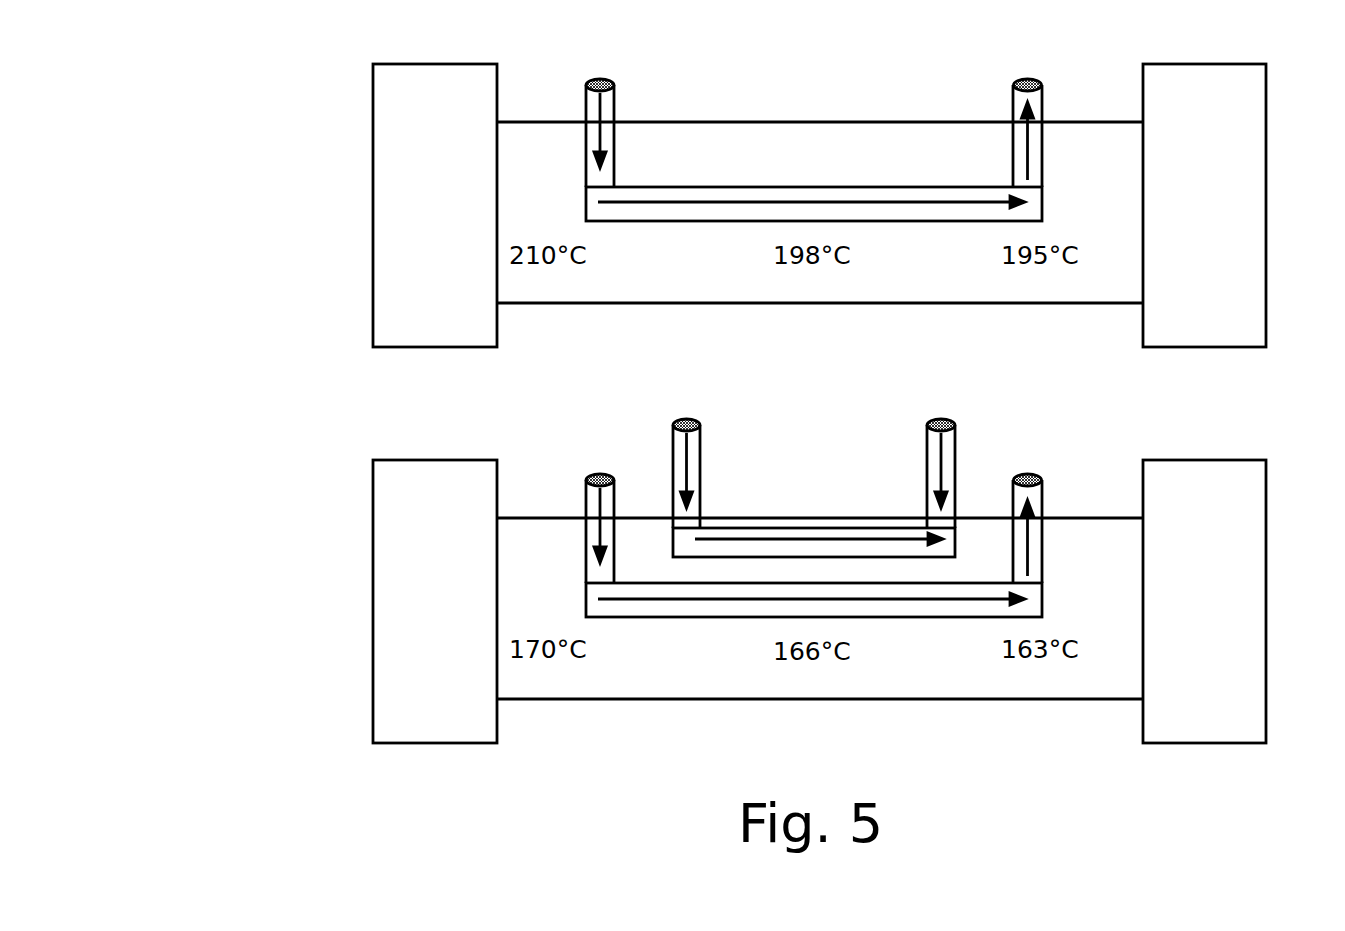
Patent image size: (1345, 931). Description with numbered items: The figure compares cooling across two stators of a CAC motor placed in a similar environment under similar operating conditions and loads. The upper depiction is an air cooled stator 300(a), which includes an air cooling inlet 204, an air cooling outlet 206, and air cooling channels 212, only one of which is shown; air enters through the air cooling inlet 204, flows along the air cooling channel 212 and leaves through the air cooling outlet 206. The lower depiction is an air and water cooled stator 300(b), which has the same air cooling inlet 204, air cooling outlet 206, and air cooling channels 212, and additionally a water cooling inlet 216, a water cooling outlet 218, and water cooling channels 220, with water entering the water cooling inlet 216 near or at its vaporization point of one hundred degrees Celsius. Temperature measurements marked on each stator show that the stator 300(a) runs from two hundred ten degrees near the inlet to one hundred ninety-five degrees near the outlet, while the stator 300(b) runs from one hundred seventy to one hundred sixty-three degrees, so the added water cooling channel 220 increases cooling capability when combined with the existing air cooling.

The stator 300 is at (734, 403).
The air cooling inlet 204 is at (608, 79).
The air cooling outlet 206 is at (1034, 79).
The air cooling channel 212 is at (820, 186).
The water cooling inlet 216 is at (697, 419).
The water cooling outlet 218 is at (951, 419).
The water cooling channel 220 is at (820, 582).